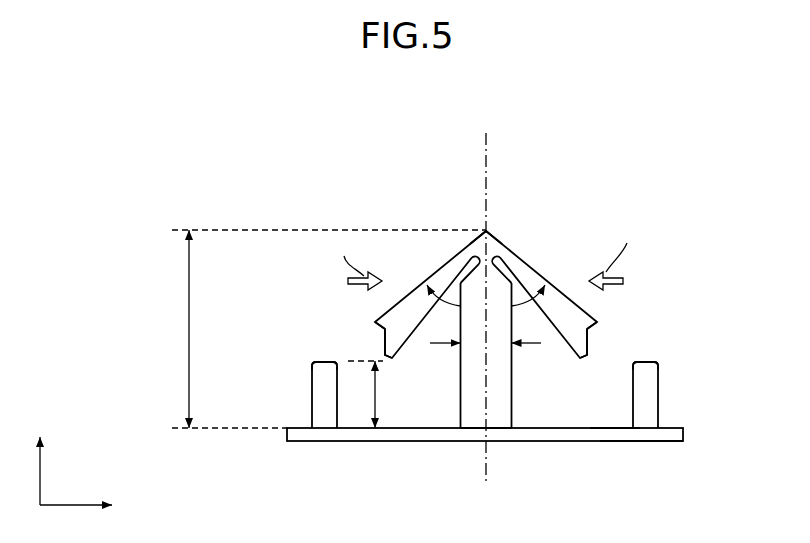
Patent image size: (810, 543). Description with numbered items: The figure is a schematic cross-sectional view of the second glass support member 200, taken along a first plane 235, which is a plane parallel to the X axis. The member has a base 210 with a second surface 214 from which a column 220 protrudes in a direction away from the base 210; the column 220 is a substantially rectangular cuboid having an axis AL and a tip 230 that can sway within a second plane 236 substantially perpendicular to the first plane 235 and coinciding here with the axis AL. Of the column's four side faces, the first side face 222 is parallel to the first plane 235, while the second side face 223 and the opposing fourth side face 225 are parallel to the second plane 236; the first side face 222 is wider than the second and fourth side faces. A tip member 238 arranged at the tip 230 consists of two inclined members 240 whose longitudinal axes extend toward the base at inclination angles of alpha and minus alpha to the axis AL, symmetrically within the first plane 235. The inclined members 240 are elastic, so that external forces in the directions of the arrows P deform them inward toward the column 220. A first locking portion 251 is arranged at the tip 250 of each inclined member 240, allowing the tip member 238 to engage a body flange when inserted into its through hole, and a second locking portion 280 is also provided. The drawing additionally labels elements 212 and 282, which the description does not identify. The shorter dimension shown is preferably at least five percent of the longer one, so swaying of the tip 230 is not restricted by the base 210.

The second glass support member 200 is at (686, 103).
The base 210 is at (676, 421).
The bottom surface of base 212 is at (640, 446).
The second surface 214 is at (611, 426).
The column 220 is at (454, 407).
The first side face 222 is at (472, 358).
The second side face 223 is at (459, 362).
The fourth side face 225 is at (512, 362).
The tip 230 is at (530, 265).
The first plane 235 is at (340, 181).
The second plane 236 is at (486, 198).
The tip member 238 is at (514, 250).
The inclined members 240 is at (410, 293).
The tip of inclined member 250 is at (383, 349).
The first locking portion 251 is at (377, 326).
The second locking portion 280 is at (311, 378).
The post top end 282 is at (319, 360).